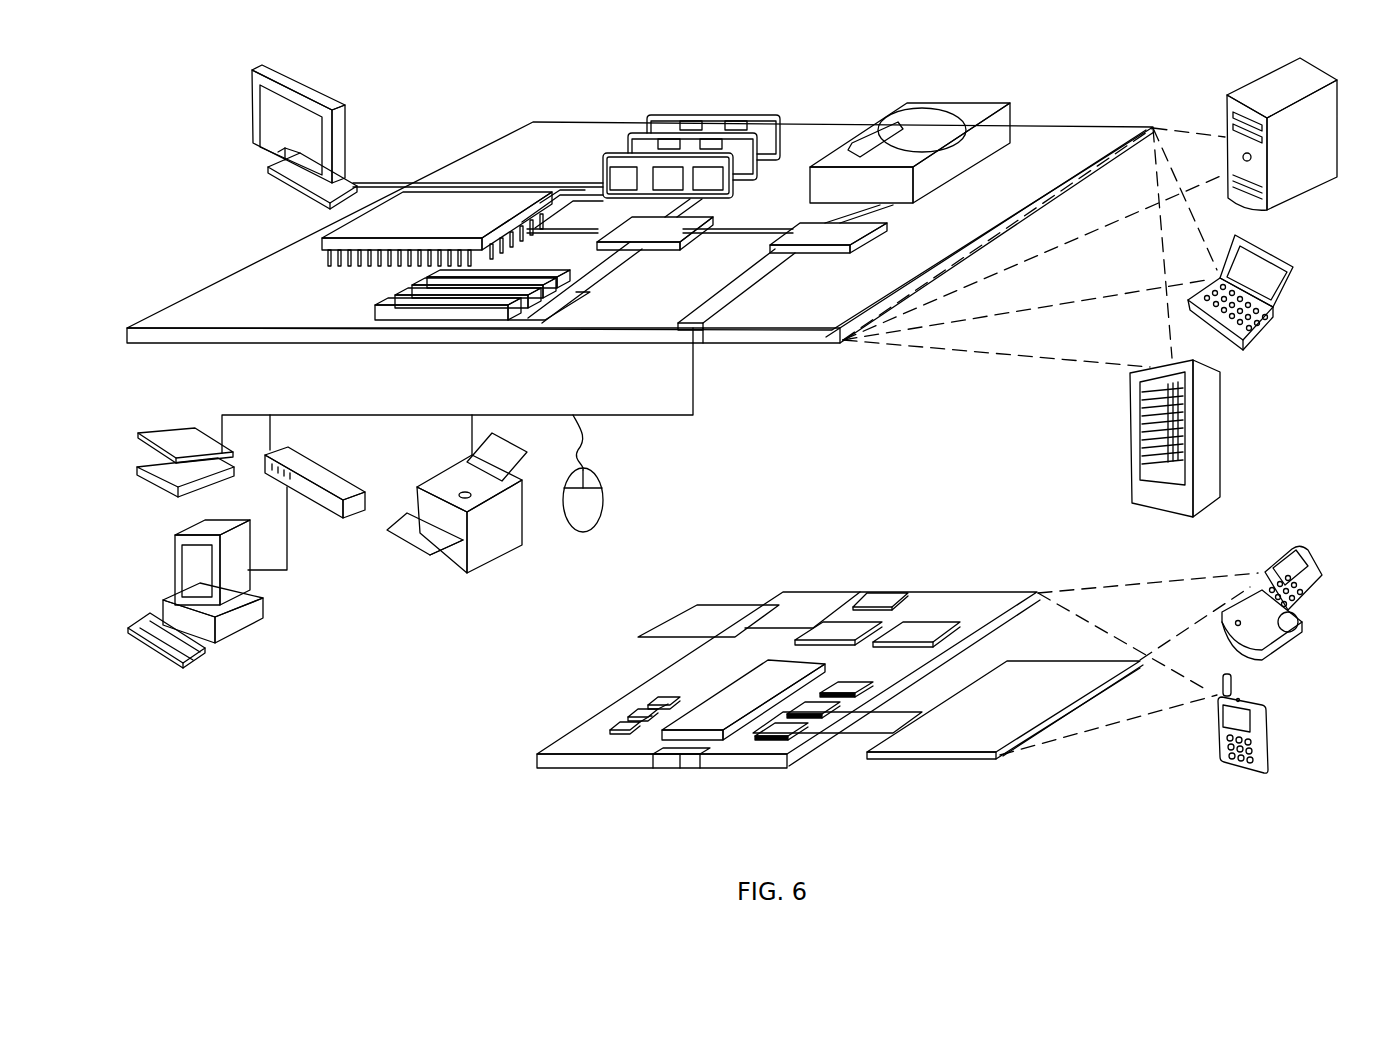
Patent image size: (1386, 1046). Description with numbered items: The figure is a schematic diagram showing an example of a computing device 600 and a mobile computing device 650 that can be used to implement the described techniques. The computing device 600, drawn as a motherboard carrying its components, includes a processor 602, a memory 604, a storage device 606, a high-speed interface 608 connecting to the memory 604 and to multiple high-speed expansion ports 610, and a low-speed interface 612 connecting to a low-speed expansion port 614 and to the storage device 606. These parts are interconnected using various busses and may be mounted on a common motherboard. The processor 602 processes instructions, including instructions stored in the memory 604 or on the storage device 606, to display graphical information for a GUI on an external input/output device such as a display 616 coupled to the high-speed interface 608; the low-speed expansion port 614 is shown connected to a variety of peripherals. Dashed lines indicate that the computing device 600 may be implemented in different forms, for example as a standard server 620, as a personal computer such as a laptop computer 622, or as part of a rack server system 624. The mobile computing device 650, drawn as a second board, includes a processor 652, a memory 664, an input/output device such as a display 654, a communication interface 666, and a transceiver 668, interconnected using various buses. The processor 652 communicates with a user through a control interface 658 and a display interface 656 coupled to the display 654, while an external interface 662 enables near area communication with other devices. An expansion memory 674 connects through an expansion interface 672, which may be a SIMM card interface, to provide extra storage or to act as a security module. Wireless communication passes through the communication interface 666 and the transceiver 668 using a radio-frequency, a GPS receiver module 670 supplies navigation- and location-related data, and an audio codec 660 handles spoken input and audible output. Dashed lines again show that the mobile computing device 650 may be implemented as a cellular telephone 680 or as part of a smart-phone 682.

The computing device 600 is at (455, 90).
The processor 602 is at (320, 243).
The memory 604 is at (660, 113).
The storage device 606 is at (907, 103).
The high-speed interface 608 is at (560, 185).
The high-speed expansion ports 610 is at (396, 302).
The low-speed interface 612 is at (795, 226).
The low-speed expansion port 614 is at (706, 344).
The display 616 is at (253, 67).
The standard server 620 is at (1227, 110).
The laptop computer 622 is at (1300, 262).
The rack server system 624 is at (1128, 463).
The mobile computing device 650 is at (509, 767).
The processor 652 is at (714, 721).
The display 654 is at (960, 745).
The display interface 656 is at (797, 742).
The control interface 658 is at (823, 718).
The audio codec 660 is at (848, 692).
The external interface 662 is at (682, 768).
The memory 664 is at (630, 712).
The communication interface 666 is at (838, 628).
The transceiver 668 is at (918, 628).
The GPS receiver module 670 is at (891, 595).
The expansion interface 672 is at (763, 598).
The expansion memory 674 is at (683, 606).
The cellular telephone 680 is at (1278, 522).
The smart-phone 682 is at (1217, 730).